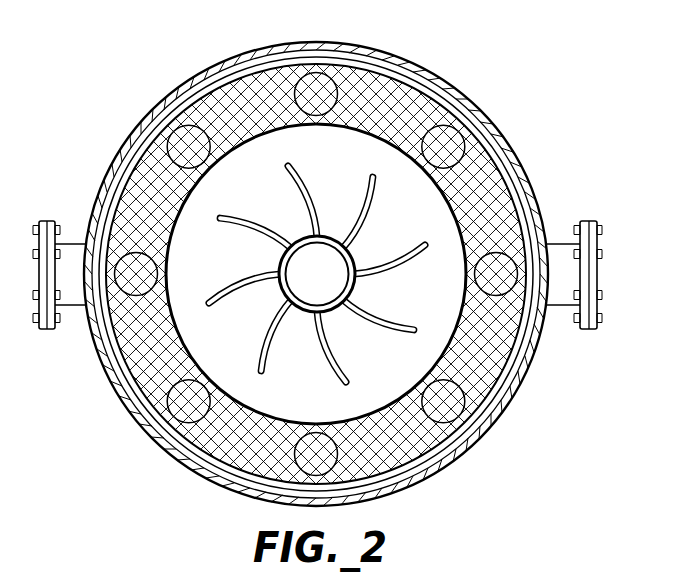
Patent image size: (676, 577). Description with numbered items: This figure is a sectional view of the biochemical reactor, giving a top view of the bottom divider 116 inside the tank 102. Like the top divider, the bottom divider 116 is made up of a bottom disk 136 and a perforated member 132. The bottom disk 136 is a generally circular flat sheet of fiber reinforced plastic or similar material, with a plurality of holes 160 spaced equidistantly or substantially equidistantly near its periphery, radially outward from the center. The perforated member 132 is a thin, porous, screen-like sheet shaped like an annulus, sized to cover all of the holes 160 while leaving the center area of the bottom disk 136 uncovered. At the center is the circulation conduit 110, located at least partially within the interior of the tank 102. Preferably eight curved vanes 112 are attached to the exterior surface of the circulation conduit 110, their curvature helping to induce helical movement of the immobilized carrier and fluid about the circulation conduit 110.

The tank 102 is at (507, 405).
The circulation conduit 110 is at (230, 276).
The curved vanes 112 is at (268, 333).
The bottom divider 116 is at (272, 148).
The perforated member 132 is at (497, 185).
The bottom disk 136 is at (357, 392).
The holes 160 is at (443, 147).